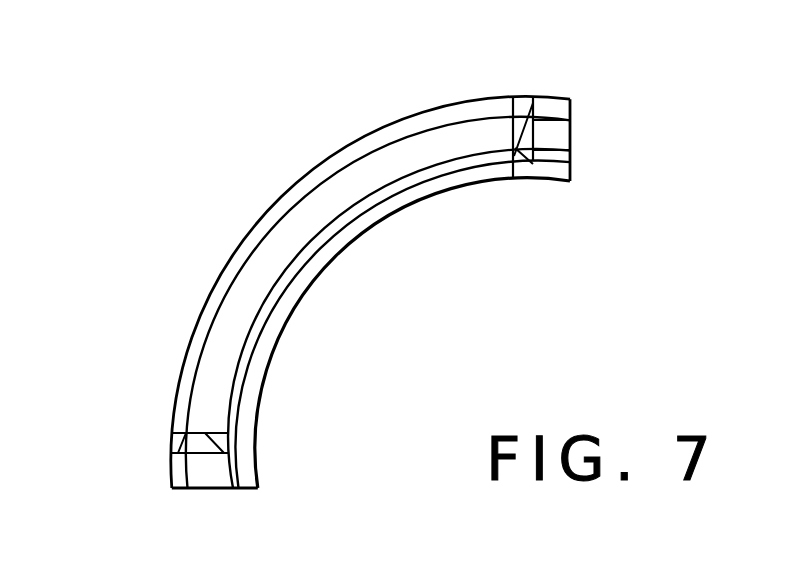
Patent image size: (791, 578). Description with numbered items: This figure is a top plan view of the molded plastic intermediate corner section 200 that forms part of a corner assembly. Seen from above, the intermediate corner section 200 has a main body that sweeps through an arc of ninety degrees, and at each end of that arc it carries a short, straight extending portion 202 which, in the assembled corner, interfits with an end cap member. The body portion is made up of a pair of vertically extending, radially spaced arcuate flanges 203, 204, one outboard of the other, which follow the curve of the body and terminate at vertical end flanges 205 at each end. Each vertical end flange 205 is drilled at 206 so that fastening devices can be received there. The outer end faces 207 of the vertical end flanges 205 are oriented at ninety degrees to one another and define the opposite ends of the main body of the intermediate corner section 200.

The intermediate corner section 200 is at (356, 279).
The short straight extending portion 202 is at (548, 125).
The arcuate flange 203 is at (238, 243).
The arcuate flange 204 is at (303, 262).
The vertical end flange 205 is at (520, 160).
The drilled hole 206 is at (557, 142).
The outer end face 207 is at (546, 100).